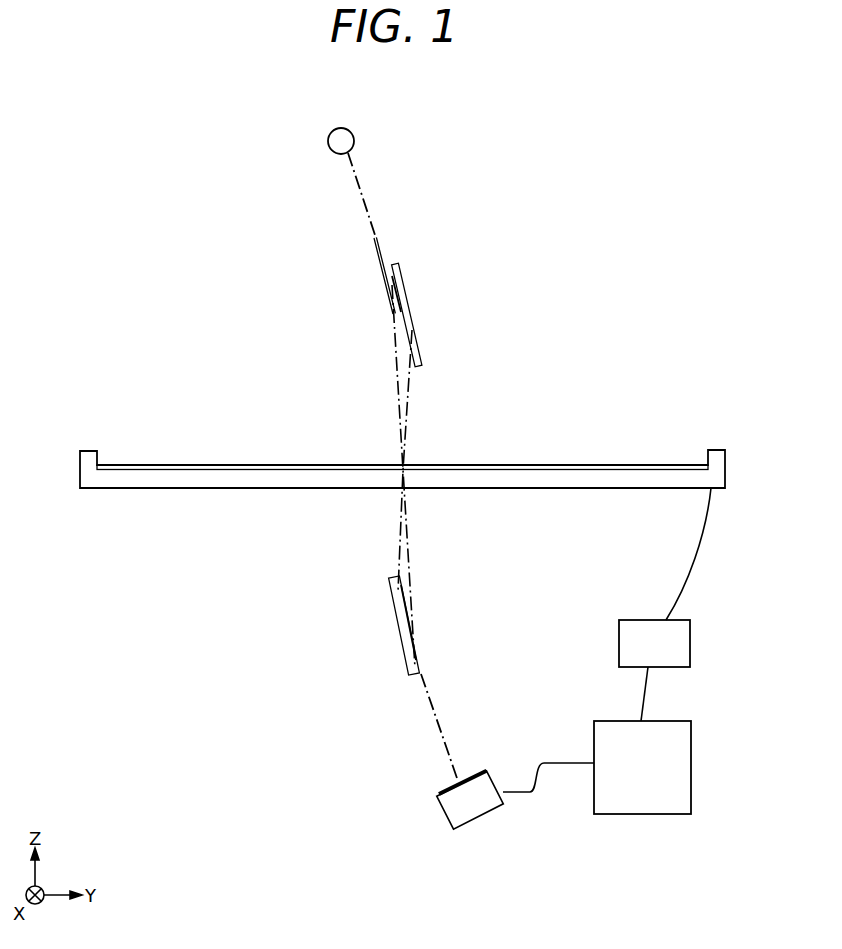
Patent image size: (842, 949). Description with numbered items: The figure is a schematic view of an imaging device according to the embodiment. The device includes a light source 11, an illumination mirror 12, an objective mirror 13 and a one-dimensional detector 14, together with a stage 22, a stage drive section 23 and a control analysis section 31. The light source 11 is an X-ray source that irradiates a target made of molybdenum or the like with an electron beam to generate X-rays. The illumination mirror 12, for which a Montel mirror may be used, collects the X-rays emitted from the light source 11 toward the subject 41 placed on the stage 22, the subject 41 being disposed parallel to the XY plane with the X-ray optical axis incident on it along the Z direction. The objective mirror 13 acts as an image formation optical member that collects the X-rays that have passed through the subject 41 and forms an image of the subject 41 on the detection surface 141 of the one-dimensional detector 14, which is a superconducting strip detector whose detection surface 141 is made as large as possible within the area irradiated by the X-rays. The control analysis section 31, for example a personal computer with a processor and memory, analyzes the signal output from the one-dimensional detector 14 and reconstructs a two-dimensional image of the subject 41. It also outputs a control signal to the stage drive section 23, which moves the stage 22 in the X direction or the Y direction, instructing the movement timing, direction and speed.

The light source 11 is at (344, 142).
The illumination mirror 12 is at (404, 302).
The objective mirror 13 is at (399, 622).
The one-dimensional detector 14 is at (474, 810).
The detection surface 141 is at (447, 796).
The stage 22 is at (718, 469).
The stage drive section 23 is at (678, 649).
The control analysis section 31 is at (680, 778).
The subject 41 is at (655, 466).